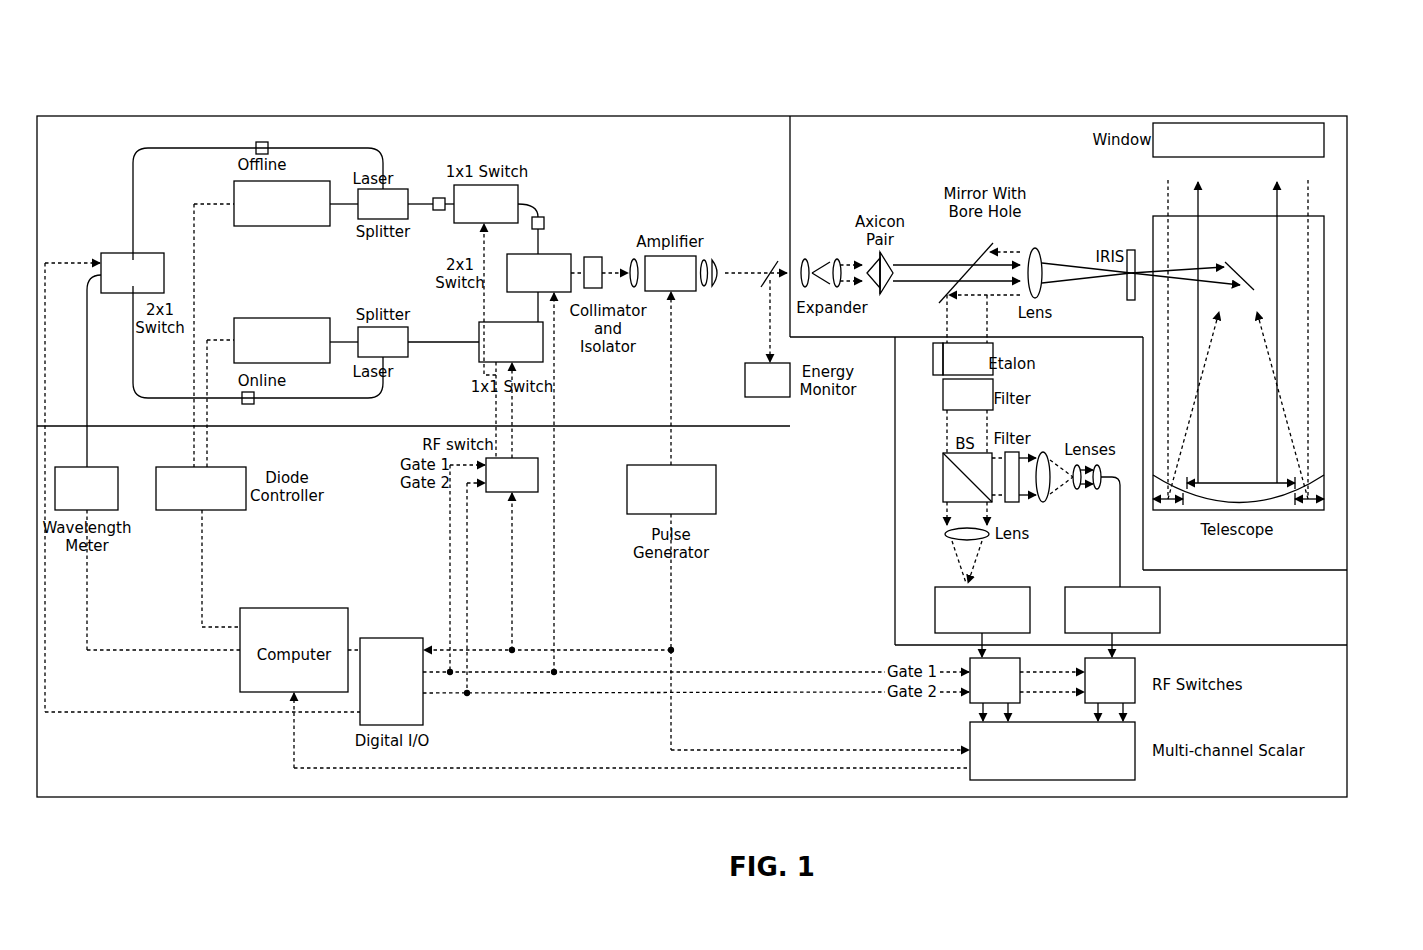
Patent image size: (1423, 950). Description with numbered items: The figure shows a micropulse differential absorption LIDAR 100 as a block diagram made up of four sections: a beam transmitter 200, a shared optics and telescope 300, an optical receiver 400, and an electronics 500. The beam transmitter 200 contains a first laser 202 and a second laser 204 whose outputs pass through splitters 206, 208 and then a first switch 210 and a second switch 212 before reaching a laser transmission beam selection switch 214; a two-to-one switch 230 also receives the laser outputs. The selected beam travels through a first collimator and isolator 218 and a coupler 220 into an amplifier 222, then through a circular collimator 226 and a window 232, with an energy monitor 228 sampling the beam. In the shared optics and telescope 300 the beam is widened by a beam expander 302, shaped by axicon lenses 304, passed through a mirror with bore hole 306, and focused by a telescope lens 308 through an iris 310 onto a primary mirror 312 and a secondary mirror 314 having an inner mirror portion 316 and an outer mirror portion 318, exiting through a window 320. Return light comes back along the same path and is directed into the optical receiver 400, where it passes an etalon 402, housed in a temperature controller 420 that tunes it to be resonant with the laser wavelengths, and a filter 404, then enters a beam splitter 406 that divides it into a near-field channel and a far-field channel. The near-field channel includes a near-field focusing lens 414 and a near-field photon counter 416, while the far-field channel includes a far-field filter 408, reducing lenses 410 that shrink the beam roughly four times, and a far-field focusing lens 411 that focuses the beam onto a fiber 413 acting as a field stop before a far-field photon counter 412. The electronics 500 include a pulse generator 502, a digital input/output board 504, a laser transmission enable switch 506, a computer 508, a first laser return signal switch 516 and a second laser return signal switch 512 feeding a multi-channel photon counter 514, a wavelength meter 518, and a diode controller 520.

The micropulse differential absorption LIDAR 100 is at (108, 40).
The beam transmitter 200 is at (92, 128).
The first laser 202 is at (267, 351).
The second laser 204 is at (267, 214).
The splitter 206 is at (368, 353).
The splitter 208 is at (368, 215).
The first switch 210 is at (496, 353).
The second switch 212 is at (471, 215).
The laser transmission beam selection switch 214 is at (524, 284).
The first collimator and isolator 218 is at (590, 257).
The coupler 220 is at (632, 259).
The amplifier 222 is at (655, 284).
The circular collimator 226 is at (714, 260).
The energy monitor 228 is at (752, 390).
The 2 to 1 switch 230 is at (117, 284).
The window 232 is at (765, 268).
The shared optics and telescope 300 is at (962, 128).
The beam expander 302 is at (803, 262).
The axicon lenses 304 is at (885, 293).
The mirror with bore hole 306 is at (990, 246).
The telescope lens 308 is at (1037, 252).
The iris 310 is at (1128, 252).
The primary mirror 312 is at (1240, 273).
The secondary mirror 314 is at (1318, 478).
The inner mirror portion 316 is at (1242, 482).
The outer mirror portion 318 is at (1172, 501).
The window 320 is at (1223, 149).
The optical receiver 400 is at (1337, 593).
The etalon 402 is at (953, 369).
The filter 404 is at (953, 404).
The beam splitter 406 is at (943, 470).
The far-field filter 408 is at (1012, 503).
The reducing lenses 410 is at (1045, 455).
The far-field focusing lens 411 is at (1100, 470).
The far-field photon counter 412 is at (1097, 617).
The fiber 413 is at (1118, 550).
The near-field focusing lens 414 is at (945, 535).
The near-field photon counter 416 is at (967, 617).
The temperature controller 420 is at (931, 358).
The electronics 500 is at (897, 797).
The pulse generator 502 is at (656, 498).
The digital I/O board 504 is at (368, 707).
The laser transmission enable switch 506 is at (497, 484).
The computer 508 is at (293, 608).
The second laser return signal switch 512 is at (1135, 697).
The multi-channel photon counter 514 is at (1060, 778).
The first laser return signal switch 516 is at (970, 697).
The wavelength meter 518 is at (72, 497).
The diode controller 520 is at (186, 497).